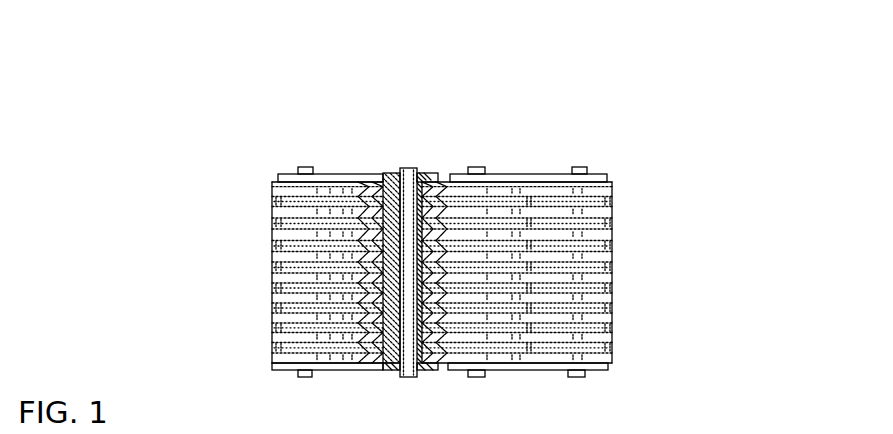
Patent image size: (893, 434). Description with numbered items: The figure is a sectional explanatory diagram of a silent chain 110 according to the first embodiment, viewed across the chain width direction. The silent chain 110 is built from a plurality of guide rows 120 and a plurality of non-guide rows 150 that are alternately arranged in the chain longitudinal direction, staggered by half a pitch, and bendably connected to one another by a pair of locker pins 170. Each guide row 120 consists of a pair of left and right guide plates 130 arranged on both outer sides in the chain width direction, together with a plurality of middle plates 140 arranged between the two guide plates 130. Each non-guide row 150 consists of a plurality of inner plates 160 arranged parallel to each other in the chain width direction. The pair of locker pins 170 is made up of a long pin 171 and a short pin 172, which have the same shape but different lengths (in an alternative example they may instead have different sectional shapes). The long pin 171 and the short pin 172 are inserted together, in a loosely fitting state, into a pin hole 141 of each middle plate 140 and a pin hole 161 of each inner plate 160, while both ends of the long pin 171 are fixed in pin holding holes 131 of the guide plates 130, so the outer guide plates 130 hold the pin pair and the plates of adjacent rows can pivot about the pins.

The silent chain 110 is at (172, 105).
The guide row 120 is at (158, 168).
The guide plate 130 is at (272, 178).
The pin holding hole 131 is at (418, 171).
The middle plate 140 is at (275, 229).
The pin hole of the middle plate 141 is at (387, 372).
The non-guide row 150 is at (704, 223).
The inner plate 160 is at (605, 238).
The pin hole of the inner plate 161 is at (422, 372).
The locker pin 170 is at (427, 112).
The long pin 171 is at (407, 168).
The short pin 172 is at (387, 178).